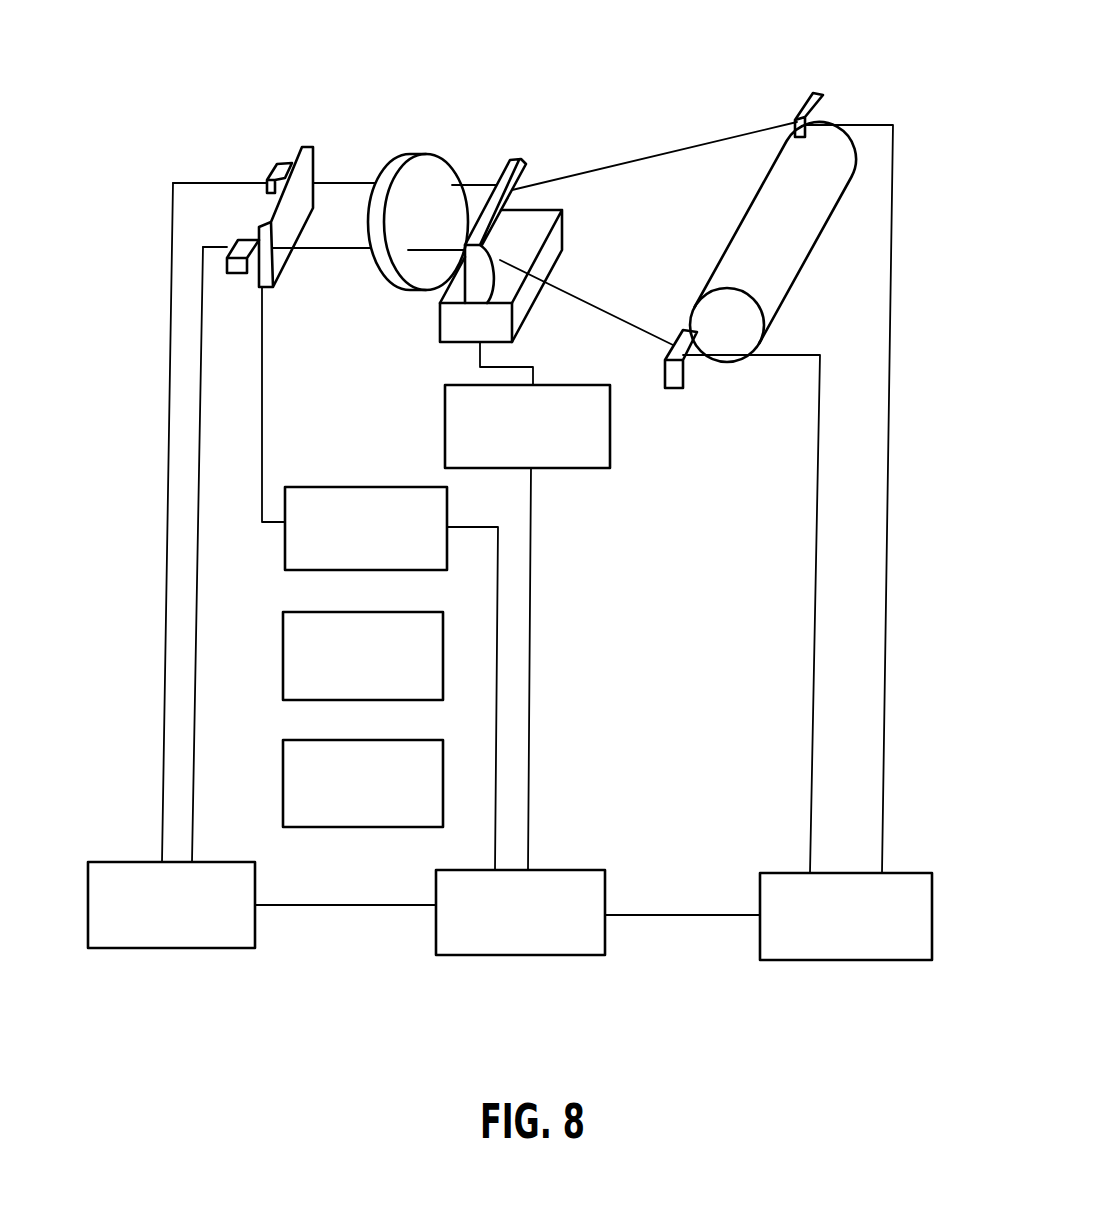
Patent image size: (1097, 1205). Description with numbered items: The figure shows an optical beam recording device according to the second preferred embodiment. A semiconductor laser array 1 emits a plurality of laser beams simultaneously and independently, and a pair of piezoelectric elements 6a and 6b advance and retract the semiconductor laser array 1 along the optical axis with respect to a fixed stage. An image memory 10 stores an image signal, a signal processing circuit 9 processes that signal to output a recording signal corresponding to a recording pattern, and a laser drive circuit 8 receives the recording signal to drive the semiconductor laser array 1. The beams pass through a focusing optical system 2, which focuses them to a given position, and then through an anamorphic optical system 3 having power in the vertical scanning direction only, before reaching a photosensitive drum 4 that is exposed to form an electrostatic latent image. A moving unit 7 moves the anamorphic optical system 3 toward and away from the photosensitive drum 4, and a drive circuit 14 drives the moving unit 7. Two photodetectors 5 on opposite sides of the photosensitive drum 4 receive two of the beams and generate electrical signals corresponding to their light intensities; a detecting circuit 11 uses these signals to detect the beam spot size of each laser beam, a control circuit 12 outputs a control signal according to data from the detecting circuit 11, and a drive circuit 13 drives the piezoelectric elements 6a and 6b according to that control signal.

The semiconductor laser array 1 is at (318, 160).
The focusing optical system 2 is at (433, 160).
The anamorphic optical system 3 is at (535, 167).
The photosensitive drum 4 is at (830, 158).
The photodetectors 5 is at (797, 100).
The piezoelectric element 6a is at (243, 273).
The piezoelectric element 6b is at (277, 170).
The moving unit 7 is at (518, 313).
The laser drive circuit 8 is at (285, 553).
The signal processing circuit 9 is at (283, 655).
The image memory 10 is at (283, 765).
The detecting circuit 11 is at (766, 873).
The control circuit 12 is at (586, 870).
The drive circuit 13 is at (102, 862).
The drive circuit 14 is at (610, 425).